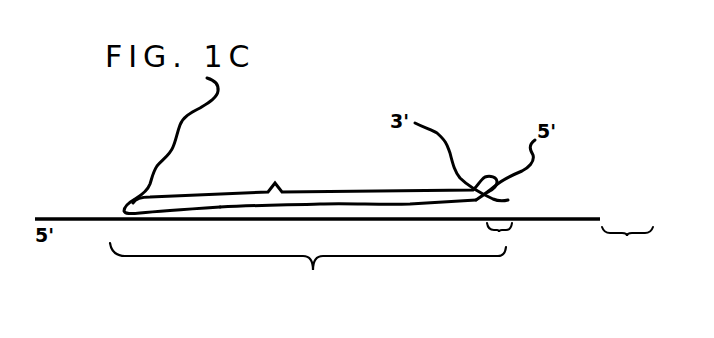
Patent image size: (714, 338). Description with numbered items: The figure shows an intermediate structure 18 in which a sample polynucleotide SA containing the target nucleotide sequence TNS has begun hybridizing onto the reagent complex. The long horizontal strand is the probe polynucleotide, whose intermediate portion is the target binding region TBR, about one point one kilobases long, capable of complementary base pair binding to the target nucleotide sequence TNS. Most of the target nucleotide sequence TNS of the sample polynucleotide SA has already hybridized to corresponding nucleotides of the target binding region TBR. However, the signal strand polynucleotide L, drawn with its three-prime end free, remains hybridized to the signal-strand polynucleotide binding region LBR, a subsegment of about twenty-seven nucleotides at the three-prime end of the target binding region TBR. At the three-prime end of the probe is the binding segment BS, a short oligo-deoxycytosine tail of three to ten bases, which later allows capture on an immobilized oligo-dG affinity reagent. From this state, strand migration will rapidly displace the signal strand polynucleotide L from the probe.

The intermediate structure 18 is at (123, 261).
The sample polynucleotide SA is at (217, 99).
The target nucleotide sequence TNS is at (315, 183).
The signal strand polynucleotide L is at (452, 134).
The target binding region TBR is at (321, 295).
The signal-strand binding region LBR is at (499, 232).
The binding segment BS is at (634, 237).